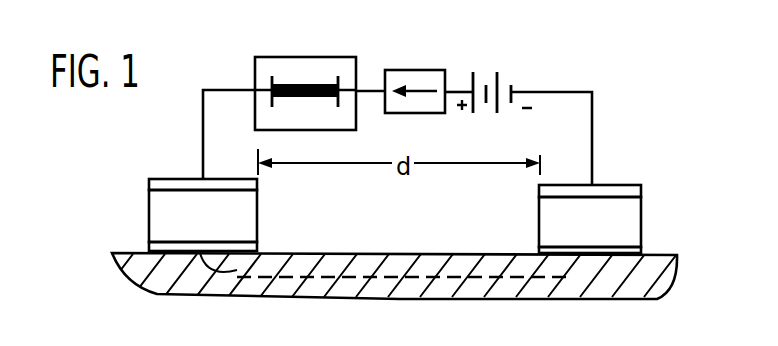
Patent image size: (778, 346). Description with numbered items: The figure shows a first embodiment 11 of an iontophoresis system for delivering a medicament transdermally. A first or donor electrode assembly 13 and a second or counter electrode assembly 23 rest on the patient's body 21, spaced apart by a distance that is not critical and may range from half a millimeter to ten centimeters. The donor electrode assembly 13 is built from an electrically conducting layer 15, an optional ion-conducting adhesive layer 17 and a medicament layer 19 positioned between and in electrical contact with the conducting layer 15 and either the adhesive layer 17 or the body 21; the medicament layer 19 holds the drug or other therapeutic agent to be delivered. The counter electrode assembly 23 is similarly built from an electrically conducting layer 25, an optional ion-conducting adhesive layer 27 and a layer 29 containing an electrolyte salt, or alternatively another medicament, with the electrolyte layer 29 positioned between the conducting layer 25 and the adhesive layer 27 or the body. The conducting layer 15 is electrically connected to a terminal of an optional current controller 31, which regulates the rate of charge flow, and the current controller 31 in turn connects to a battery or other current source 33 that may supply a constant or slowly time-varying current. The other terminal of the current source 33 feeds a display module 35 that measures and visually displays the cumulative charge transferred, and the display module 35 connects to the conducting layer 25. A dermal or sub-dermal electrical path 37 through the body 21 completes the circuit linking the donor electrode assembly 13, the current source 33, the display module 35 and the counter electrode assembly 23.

The first embodiment 11 is at (598, 56).
The first electrode assembly 13 is at (562, 209).
The electrically conducting layer 15 is at (539, 191).
The ion-conducting adhesive layer 17 is at (540, 248).
The medicament layer 19 is at (552, 213).
The patient's body 21 is at (130, 281).
The second electrode assembly 23 is at (227, 207).
The electrically conducting layer 25 is at (257, 184).
The ion-conducting adhesive layer 27 is at (255, 246).
The electrolyte layer 29 is at (247, 218).
The current controller 31 is at (417, 70).
The current source 33 is at (497, 72).
The display module 35 is at (294, 57).
The electrical path 37 is at (300, 298).